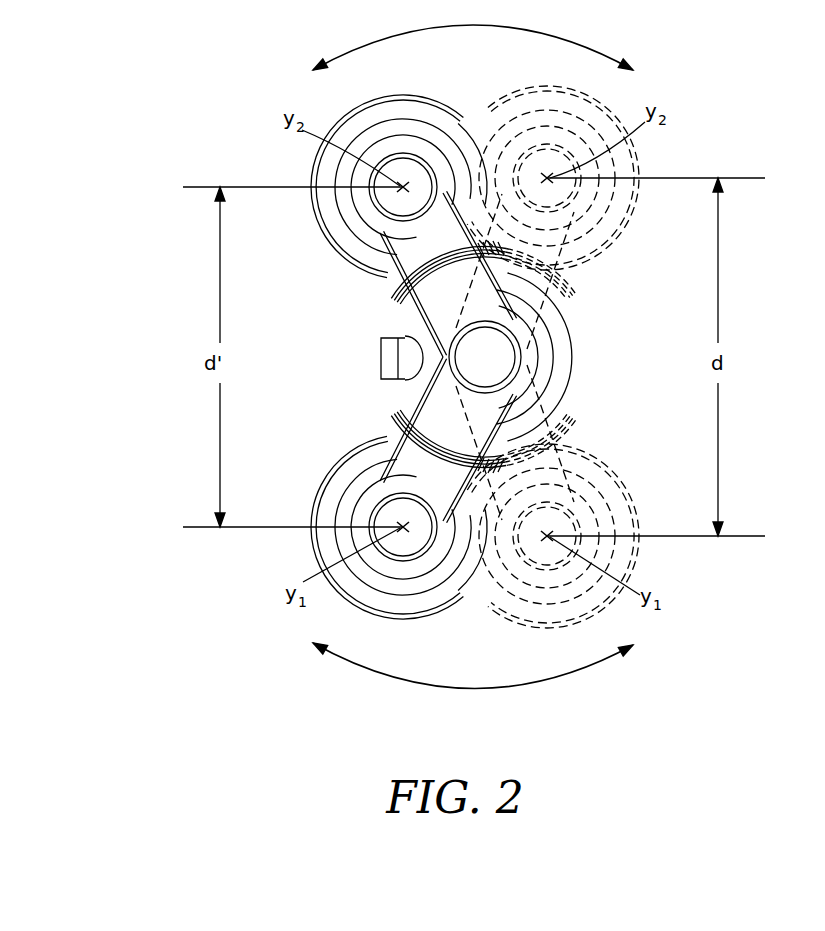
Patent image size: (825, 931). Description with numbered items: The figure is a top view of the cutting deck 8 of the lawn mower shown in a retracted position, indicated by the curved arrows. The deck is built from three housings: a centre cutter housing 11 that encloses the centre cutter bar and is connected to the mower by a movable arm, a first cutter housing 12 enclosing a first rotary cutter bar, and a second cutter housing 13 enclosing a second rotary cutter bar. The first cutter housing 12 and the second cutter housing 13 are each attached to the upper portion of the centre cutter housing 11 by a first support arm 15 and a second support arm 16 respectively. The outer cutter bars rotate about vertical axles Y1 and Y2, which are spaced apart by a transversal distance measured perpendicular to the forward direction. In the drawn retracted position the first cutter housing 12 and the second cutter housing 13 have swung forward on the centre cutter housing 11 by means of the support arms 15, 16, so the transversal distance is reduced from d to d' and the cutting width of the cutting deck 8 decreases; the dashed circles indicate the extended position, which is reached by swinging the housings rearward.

The cutting deck 8 is at (132, 108).
The centre cutter housing 11 is at (575, 357).
The first cutter housing 12 is at (318, 537).
The second cutter housing 13 is at (317, 157).
The first support arm 15 is at (403, 466).
The second support arm 16 is at (397, 288).